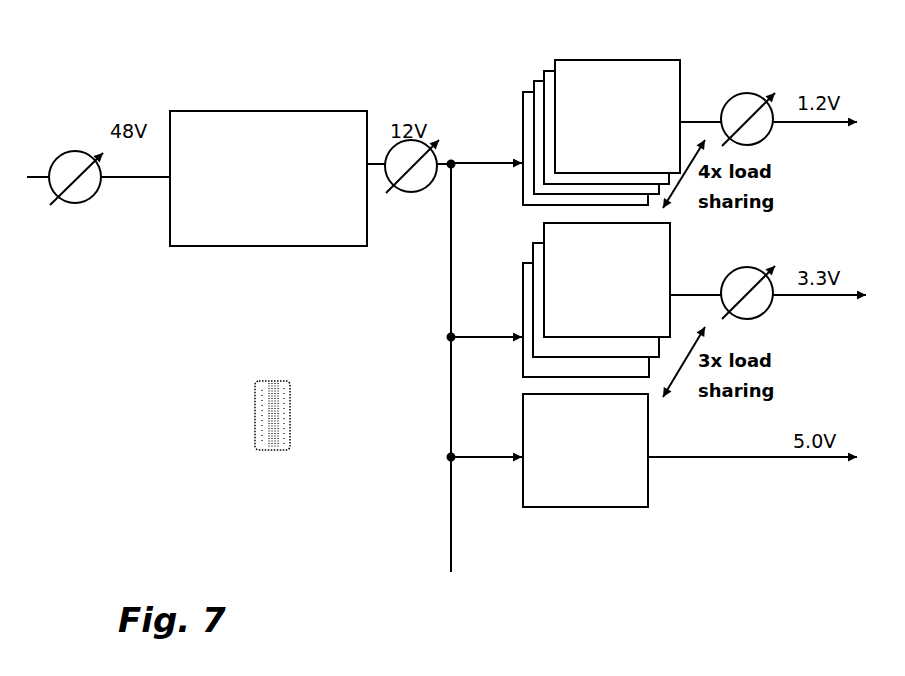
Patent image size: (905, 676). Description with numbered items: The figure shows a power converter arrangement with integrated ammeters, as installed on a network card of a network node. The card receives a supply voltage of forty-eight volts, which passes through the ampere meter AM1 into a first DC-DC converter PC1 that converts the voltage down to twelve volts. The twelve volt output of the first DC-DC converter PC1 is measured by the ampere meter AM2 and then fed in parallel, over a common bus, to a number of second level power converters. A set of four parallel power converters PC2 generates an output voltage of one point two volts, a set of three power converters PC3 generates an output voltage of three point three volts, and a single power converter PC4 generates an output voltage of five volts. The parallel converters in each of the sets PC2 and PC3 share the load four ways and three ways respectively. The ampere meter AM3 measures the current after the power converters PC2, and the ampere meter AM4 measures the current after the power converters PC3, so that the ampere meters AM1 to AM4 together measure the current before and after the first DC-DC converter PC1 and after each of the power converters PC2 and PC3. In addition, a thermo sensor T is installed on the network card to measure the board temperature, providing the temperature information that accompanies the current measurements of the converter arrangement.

The ampere meter AM1 is at (78, 204).
The ampere meter AM2 is at (405, 193).
The ampere meter AM3 is at (752, 93).
The ampere meter AM4 is at (767, 312).
The first DC-DC converter PC1 is at (258, 108).
The power converters PC2 is at (599, 46).
The power converters PC3 is at (675, 248).
The power converter PC4 is at (648, 490).
The thermo sensor T is at (280, 455).